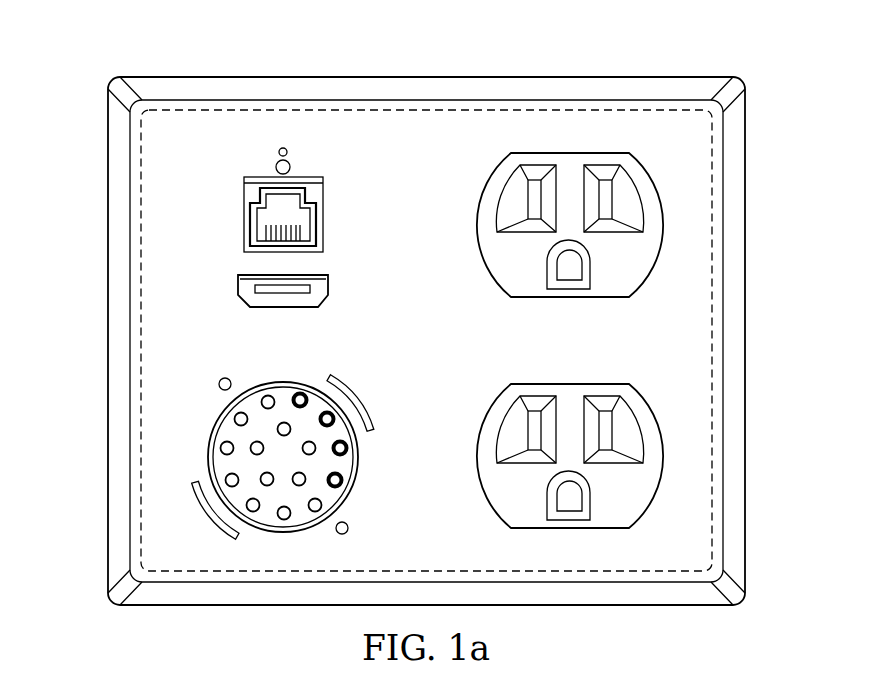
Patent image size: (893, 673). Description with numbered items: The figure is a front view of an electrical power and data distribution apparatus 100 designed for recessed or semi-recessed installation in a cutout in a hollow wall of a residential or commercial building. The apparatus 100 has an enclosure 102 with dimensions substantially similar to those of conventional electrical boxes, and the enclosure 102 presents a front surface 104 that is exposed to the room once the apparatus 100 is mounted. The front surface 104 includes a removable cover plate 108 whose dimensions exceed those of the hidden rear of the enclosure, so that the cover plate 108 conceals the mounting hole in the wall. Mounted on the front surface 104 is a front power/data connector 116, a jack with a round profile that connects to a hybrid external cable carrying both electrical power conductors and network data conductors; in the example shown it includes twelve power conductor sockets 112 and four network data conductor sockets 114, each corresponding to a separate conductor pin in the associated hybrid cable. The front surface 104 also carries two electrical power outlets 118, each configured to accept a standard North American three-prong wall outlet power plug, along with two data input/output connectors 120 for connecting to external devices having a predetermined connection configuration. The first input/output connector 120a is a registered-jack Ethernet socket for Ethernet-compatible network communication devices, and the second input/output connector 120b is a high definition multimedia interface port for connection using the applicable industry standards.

The distribution apparatus 100 is at (556, 62).
The enclosure 102 is at (140, 387).
The front surface 104 is at (153, 337).
The cover plate 108 is at (735, 340).
The power conductor sockets 112 is at (221, 448).
The network data conductor sockets 114 is at (300, 393).
The front power/data connector 116 is at (284, 381).
The electrical power outlet 118 is at (546, 383).
The data input/output connector 120 is at (229, 152).
The first input/output connector 120a is at (323, 218).
The second input/output connector 120b is at (328, 285).